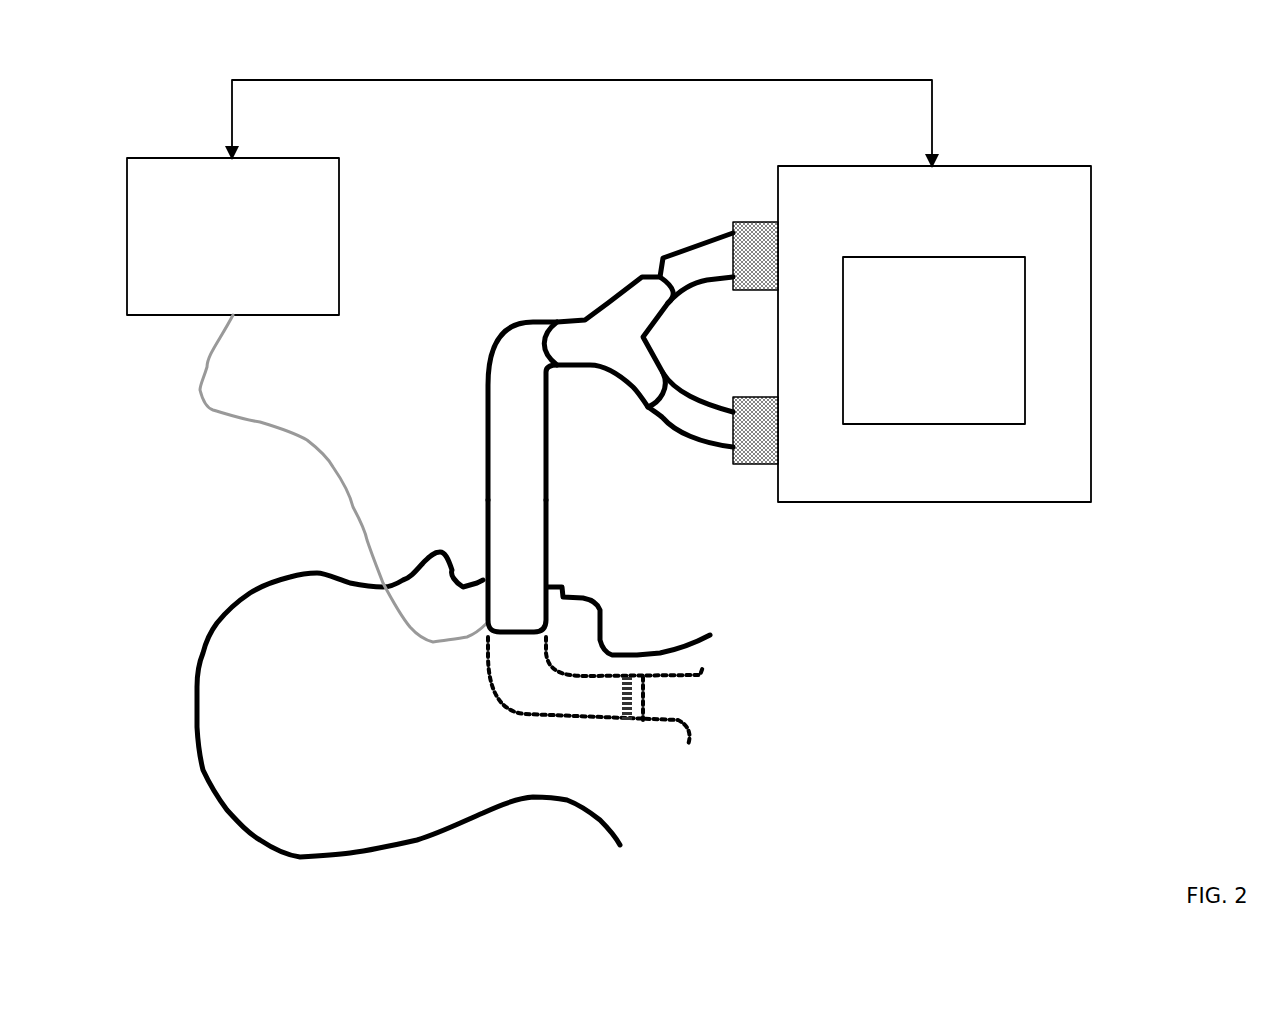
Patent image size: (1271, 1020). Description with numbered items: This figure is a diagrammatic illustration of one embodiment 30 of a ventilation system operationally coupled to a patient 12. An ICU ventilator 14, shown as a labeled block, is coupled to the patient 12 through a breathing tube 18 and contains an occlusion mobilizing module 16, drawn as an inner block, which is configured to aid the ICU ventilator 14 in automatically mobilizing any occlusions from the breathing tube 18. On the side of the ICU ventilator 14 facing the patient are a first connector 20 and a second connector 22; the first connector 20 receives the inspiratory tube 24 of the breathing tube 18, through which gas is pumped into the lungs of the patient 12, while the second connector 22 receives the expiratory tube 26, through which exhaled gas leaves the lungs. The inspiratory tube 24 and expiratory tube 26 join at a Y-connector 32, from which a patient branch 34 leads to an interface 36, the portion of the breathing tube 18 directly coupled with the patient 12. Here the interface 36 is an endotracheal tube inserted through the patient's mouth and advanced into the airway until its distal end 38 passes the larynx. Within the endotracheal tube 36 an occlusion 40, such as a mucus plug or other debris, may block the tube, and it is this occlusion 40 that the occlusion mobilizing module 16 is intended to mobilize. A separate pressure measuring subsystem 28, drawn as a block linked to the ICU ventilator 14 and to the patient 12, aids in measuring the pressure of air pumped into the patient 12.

The patient 12 is at (210, 630).
The ICU ventilator 14 is at (1093, 257).
The occlusion mobilizing module 16 is at (1025, 348).
The breathing tube 18 is at (478, 301).
The first connector 20 is at (750, 292).
The second connector 22 is at (758, 465).
The inspiratory tube 24 is at (700, 240).
The expiratory tube 26 is at (703, 448).
The pressure measuring subsystem 28 is at (150, 315).
The embodiment of the ventilation system 30 is at (1196, 94).
The Y-connector 32 is at (608, 300).
The patient branch 34 is at (486, 430).
The interface 36 is at (487, 530).
The distal end 38 is at (650, 700).
The occlusion 40 is at (618, 693).